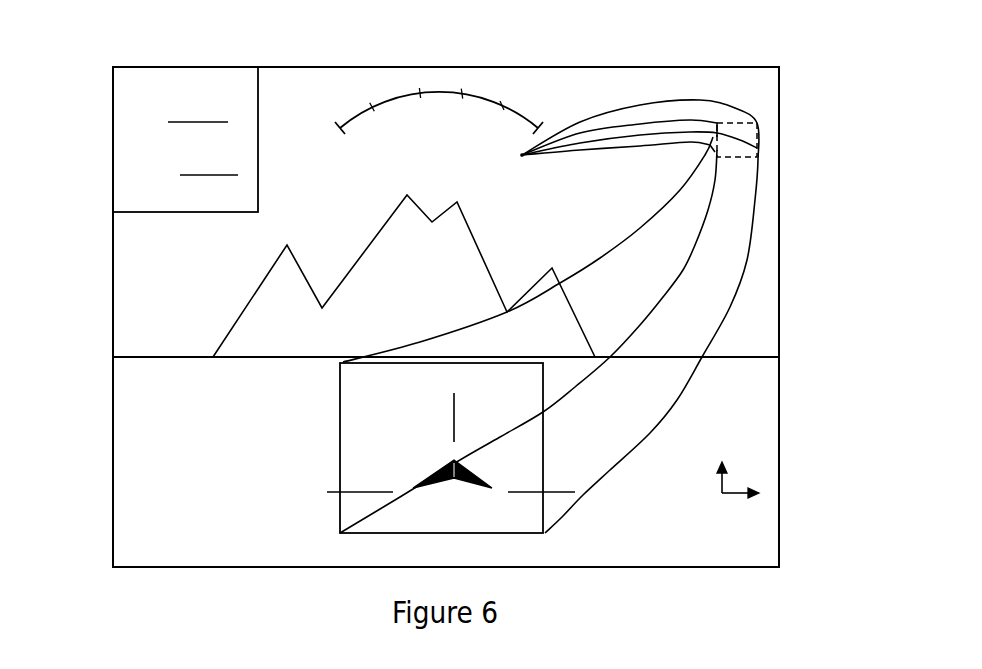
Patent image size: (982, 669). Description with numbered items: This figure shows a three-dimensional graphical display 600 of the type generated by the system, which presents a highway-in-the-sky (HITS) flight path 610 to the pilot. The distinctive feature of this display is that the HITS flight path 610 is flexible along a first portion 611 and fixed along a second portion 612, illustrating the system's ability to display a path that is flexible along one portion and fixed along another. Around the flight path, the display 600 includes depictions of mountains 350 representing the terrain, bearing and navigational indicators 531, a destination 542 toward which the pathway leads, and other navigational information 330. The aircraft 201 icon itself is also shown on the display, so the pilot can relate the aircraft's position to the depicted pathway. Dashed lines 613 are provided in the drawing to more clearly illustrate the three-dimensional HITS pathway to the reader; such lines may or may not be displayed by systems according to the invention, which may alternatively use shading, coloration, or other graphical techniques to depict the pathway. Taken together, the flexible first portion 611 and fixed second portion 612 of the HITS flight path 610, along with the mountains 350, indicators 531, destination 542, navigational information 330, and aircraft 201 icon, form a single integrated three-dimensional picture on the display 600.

The navigational information 330 is at (112, 145).
The mountains 350 is at (363, 252).
The destination 542 is at (516, 153).
The second portion 612 is at (595, 118).
The dashed lines 613 is at (735, 123).
The three-dimensional graphical display 600 is at (780, 213).
The first portion 611 is at (678, 400).
The highway-in-the-sky flight path 610 is at (338, 440).
The aircraft icon 201 is at (438, 468).
The bearing and navigational indicators 531 is at (735, 483).